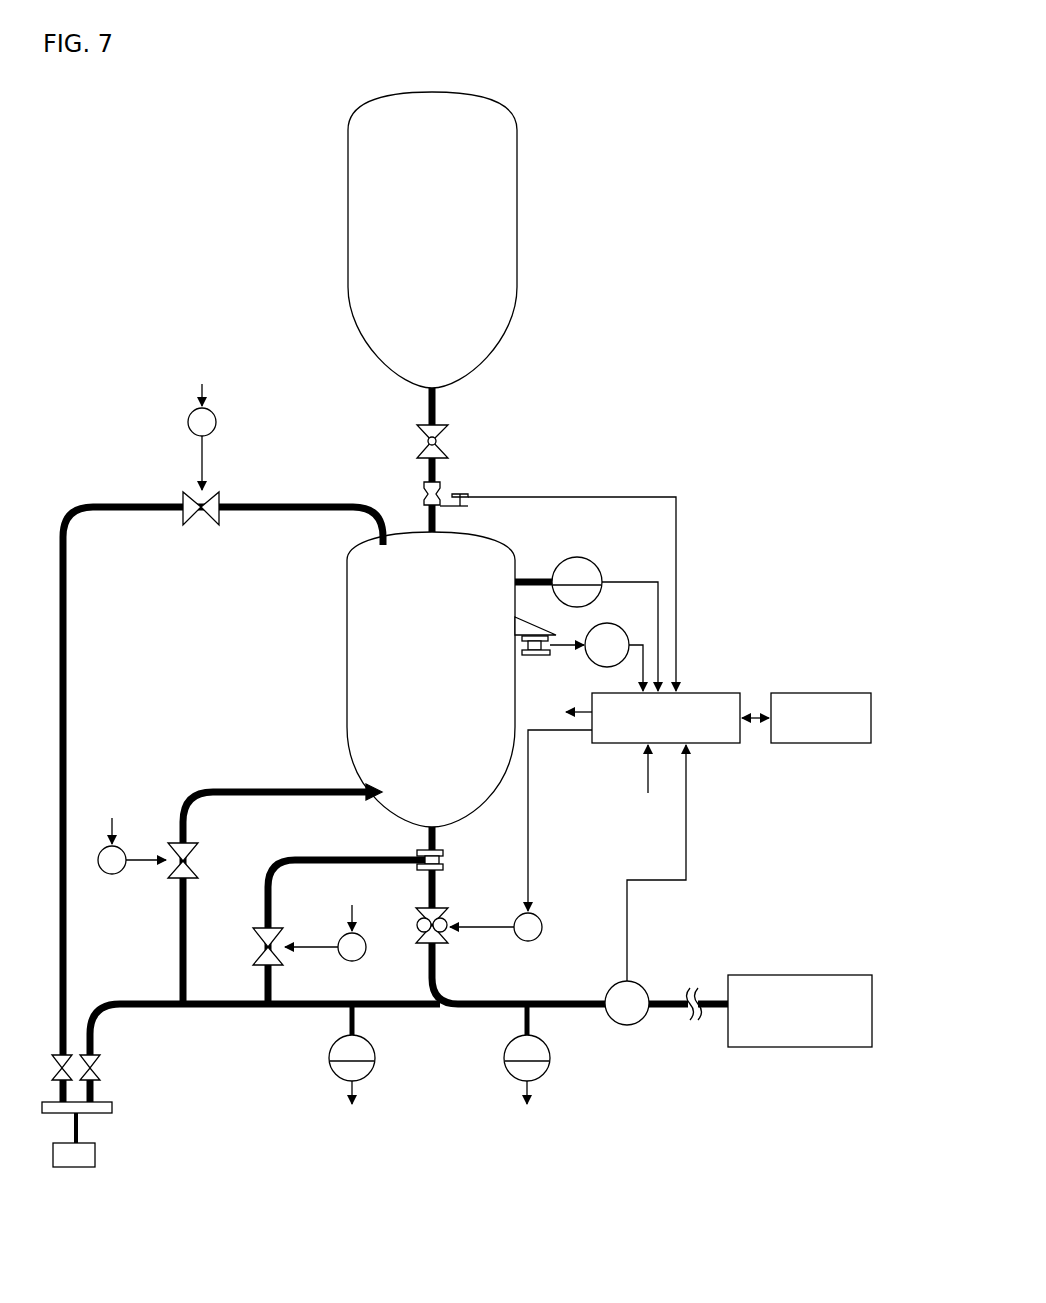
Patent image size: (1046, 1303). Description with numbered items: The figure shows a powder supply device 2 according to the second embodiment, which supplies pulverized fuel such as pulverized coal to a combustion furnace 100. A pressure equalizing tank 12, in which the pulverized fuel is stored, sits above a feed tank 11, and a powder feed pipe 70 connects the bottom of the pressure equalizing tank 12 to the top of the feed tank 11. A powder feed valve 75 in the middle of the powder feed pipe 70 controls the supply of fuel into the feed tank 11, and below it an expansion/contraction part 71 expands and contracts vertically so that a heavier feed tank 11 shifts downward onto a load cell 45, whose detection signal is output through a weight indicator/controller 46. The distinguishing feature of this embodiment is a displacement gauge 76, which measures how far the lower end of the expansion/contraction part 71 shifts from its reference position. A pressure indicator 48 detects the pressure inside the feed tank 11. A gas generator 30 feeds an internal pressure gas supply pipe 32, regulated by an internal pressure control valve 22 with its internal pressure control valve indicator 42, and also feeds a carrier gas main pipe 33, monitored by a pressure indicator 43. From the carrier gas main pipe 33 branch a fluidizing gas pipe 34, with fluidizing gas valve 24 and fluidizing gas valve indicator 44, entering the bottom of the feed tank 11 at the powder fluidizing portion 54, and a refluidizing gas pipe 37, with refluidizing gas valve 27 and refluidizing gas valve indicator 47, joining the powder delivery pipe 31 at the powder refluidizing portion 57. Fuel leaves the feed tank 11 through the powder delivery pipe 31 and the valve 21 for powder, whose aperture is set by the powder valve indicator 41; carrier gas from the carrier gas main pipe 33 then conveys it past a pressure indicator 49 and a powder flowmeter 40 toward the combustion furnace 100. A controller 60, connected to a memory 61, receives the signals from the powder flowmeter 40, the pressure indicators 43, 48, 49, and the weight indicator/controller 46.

The powder supply device 2 is at (686, 98).
The feed tank 11 is at (500, 565).
The pressure equalizing tank 12 is at (512, 150).
The valve for powder 21 is at (440, 906).
The internal pressure control valve 22 is at (220, 500).
The fluidizing gas valve 24 is at (175, 848).
The refluidizing gas valve 27 is at (262, 935).
The gas generator 30 is at (92, 1150).
The powder delivery pipe 31 is at (426, 846).
The internal pressure gas supply pipe 32 is at (140, 505).
The carrier gas main pipe 33 is at (330, 1008).
The fluidizing gas pipe 34 is at (262, 790).
The refluidizing gas pipe 37 is at (330, 858).
The powder flowmeter 40 is at (637, 992).
The powder valve indicator 41 is at (536, 918).
The internal pressure control valve indicator 42 is at (210, 415).
The pressure indicator 43 is at (336, 1075).
The fluidizing gas valve indicator 44 is at (108, 868).
The load cell 45 is at (545, 655).
The weight indicator/controller 46 is at (615, 630).
The refluidizing gas valve indicator 47 is at (360, 935).
The pressure indicator 48 is at (595, 570).
The pressure indicator 49 is at (515, 1073).
The powder fluidizing portion 54 is at (370, 787).
The powder refluidizing portion 57 is at (445, 855).
The controller 60 is at (700, 700).
The memory 61 is at (825, 740).
The powder feed pipe 70 is at (428, 481).
The expansion/contraction part 71 is at (424, 496).
The powder feed valve 75 is at (440, 432).
The displacement gauge 76 is at (465, 492).
The combustion furnace 100 is at (805, 985).